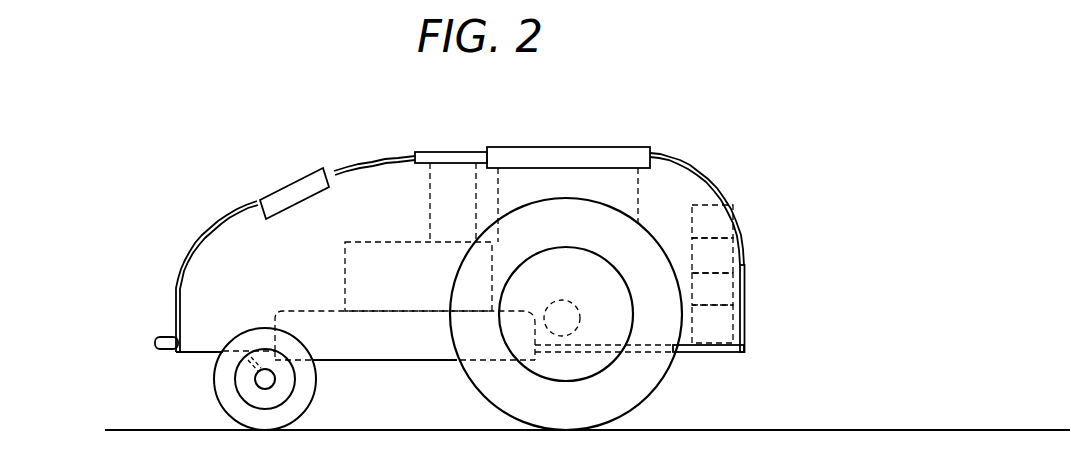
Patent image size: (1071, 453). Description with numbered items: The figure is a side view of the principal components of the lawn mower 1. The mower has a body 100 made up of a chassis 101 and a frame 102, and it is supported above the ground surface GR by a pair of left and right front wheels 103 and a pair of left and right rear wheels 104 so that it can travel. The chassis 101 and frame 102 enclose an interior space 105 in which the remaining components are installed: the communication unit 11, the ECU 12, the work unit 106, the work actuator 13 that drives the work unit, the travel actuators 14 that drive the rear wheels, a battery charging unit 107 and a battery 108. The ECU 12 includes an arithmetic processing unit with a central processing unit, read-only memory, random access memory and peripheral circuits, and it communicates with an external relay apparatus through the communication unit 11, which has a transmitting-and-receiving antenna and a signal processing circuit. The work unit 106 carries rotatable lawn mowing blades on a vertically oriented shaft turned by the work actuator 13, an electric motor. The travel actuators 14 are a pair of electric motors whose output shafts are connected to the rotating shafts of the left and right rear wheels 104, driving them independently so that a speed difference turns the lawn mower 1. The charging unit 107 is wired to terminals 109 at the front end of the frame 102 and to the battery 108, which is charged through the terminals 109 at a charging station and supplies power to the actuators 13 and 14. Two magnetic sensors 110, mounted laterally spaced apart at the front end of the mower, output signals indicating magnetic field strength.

The lawn mower 1 is at (700, 161).
The communication unit 11 is at (725, 233).
The ECU 12 is at (725, 267).
The work actuator 13 is at (406, 288).
The travel actuators 14 is at (568, 301).
The body 100 is at (811, 295).
The chassis 101 is at (746, 323).
The frame 102 is at (744, 258).
The front wheels 103 is at (221, 403).
The rear wheels 104 is at (472, 386).
The interior space 105 is at (714, 201).
The work unit 106 is at (391, 346).
The battery charging unit 107 is at (693, 300).
The battery 108 is at (693, 335).
The terminals 109 is at (167, 336).
The magnetic sensors 110 is at (294, 181).
The ground surface GR is at (687, 430).